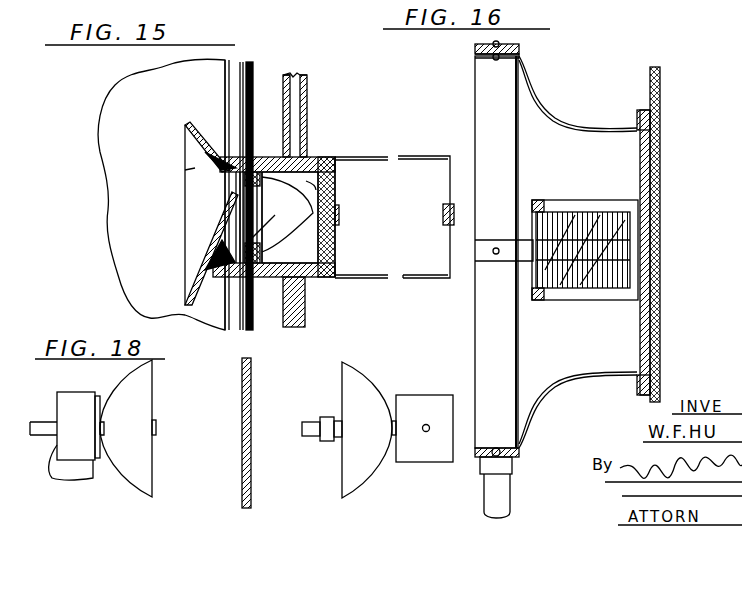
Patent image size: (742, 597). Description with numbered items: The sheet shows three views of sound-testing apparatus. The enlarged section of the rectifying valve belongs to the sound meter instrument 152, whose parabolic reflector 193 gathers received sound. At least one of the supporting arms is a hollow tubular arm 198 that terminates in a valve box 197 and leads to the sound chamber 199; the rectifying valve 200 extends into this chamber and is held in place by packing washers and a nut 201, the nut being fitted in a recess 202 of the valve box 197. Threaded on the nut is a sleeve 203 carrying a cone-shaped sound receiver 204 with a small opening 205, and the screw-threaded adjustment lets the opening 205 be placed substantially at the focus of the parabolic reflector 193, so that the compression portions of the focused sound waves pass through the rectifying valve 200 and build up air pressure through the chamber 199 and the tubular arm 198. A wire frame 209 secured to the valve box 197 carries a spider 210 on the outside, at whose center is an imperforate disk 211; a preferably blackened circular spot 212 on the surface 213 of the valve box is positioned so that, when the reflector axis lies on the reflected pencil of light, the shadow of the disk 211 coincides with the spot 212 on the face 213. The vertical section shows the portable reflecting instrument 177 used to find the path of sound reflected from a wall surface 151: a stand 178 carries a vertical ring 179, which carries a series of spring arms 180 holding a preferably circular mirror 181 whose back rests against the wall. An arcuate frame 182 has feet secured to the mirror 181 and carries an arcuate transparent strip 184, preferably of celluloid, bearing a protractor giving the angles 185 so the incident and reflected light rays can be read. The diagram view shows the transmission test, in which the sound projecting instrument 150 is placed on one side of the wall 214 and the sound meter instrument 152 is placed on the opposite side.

In FIG. 18, the sound projecting instrument 150 is at (338, 475).
In FIG. 16, the wall surface 151 is at (648, 88).
In FIG. 15, the sound meter instrument 152 is at (345, 138).
In FIG. 18, the sound meter instrument 152 is at (152, 474).
In FIG. 16, the portable reflecting instrument 177 is at (667, 163).
In FIG. 16, the stand 178 is at (517, 504).
In FIG. 16, the vertical ring 179 is at (507, 90).
In FIG. 16, the spring arms 180 is at (588, 126).
In FIG. 16, the mirror 181 is at (650, 368).
In FIG. 16, the arcuate frame 182 is at (568, 302).
In FIG. 16, the arcuate transparent strip 184 is at (532, 277).
In FIG. 16, the angles 185 is at (586, 222).
In FIG. 15, the parabolic reflector 193 is at (98, 153).
In FIG. 15, the valve box 197 is at (316, 278).
In FIG. 15, the tubular arm 198 is at (307, 120).
In FIG. 15, the sound chamber 199 is at (338, 186).
In FIG. 15, the rectifying valve 200 is at (228, 285).
In FIG. 15, the nut 201 is at (265, 277).
In FIG. 15, the recess 202 is at (222, 183).
In FIG. 15, the sleeve 203 is at (218, 154).
In FIG. 15, the cone-shaped sound receiver 204 is at (185, 172).
In FIG. 15, the opening 205 is at (235, 208).
In FIG. 15, the wire frame 209 is at (433, 281).
In FIG. 15, the spider 210 is at (448, 192).
In FIG. 15, the imperforate disk 211 is at (443, 215).
In FIG. 15, the circular spot 212 is at (341, 212).
In FIG. 15, the surface 213 is at (338, 236).
In FIG. 18, the wall 214 is at (252, 407).